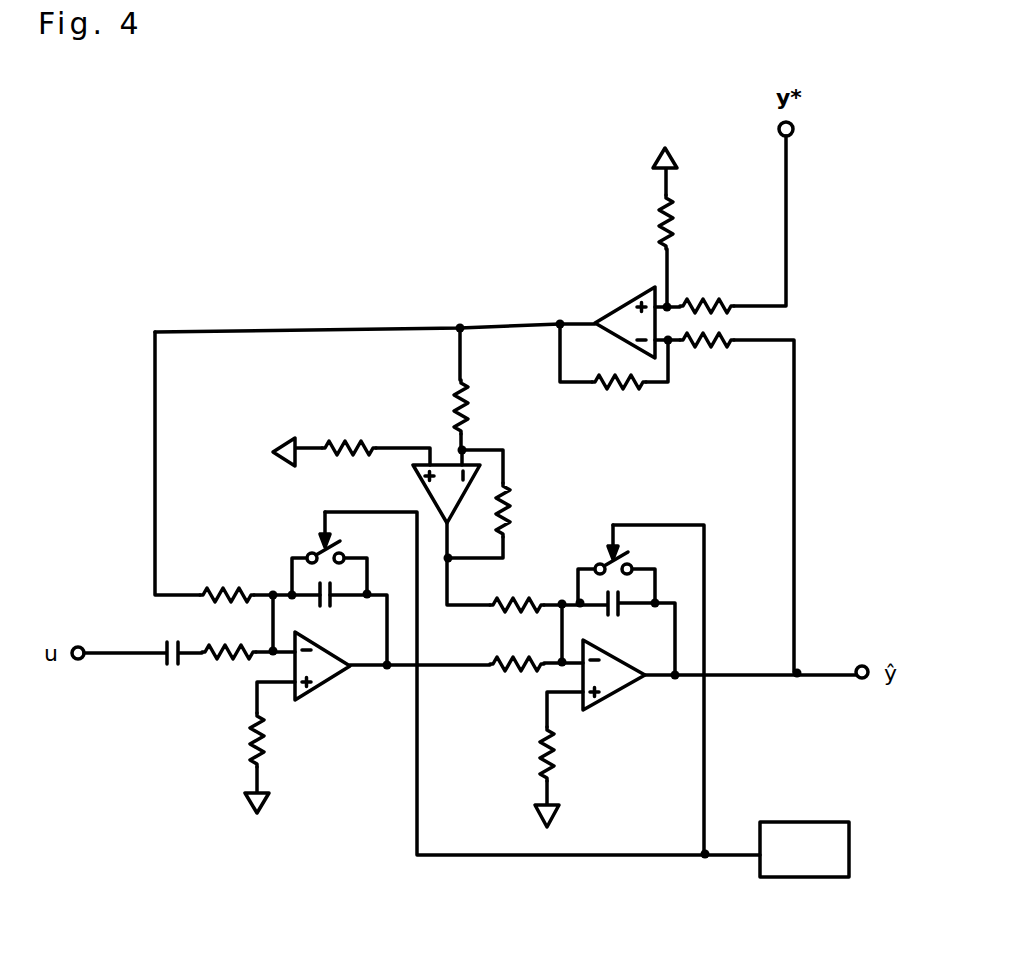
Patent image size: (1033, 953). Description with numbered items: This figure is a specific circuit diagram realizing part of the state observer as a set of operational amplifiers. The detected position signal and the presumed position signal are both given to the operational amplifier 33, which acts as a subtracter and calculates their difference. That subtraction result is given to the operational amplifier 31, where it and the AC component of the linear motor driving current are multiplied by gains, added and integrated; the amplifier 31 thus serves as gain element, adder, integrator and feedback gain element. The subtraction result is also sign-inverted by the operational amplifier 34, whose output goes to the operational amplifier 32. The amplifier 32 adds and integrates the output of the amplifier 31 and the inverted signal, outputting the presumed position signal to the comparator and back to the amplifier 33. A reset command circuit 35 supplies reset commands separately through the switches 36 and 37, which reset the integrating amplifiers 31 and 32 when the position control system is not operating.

The operational amplifier 31 is at (330, 692).
The operational amplifier 32 is at (608, 697).
The operational amplifier 33 is at (623, 302).
The operational amplifier 34 is at (417, 476).
The reset command circuit 35 is at (787, 878).
The switch 36 is at (320, 543).
The switch 37 is at (608, 552).